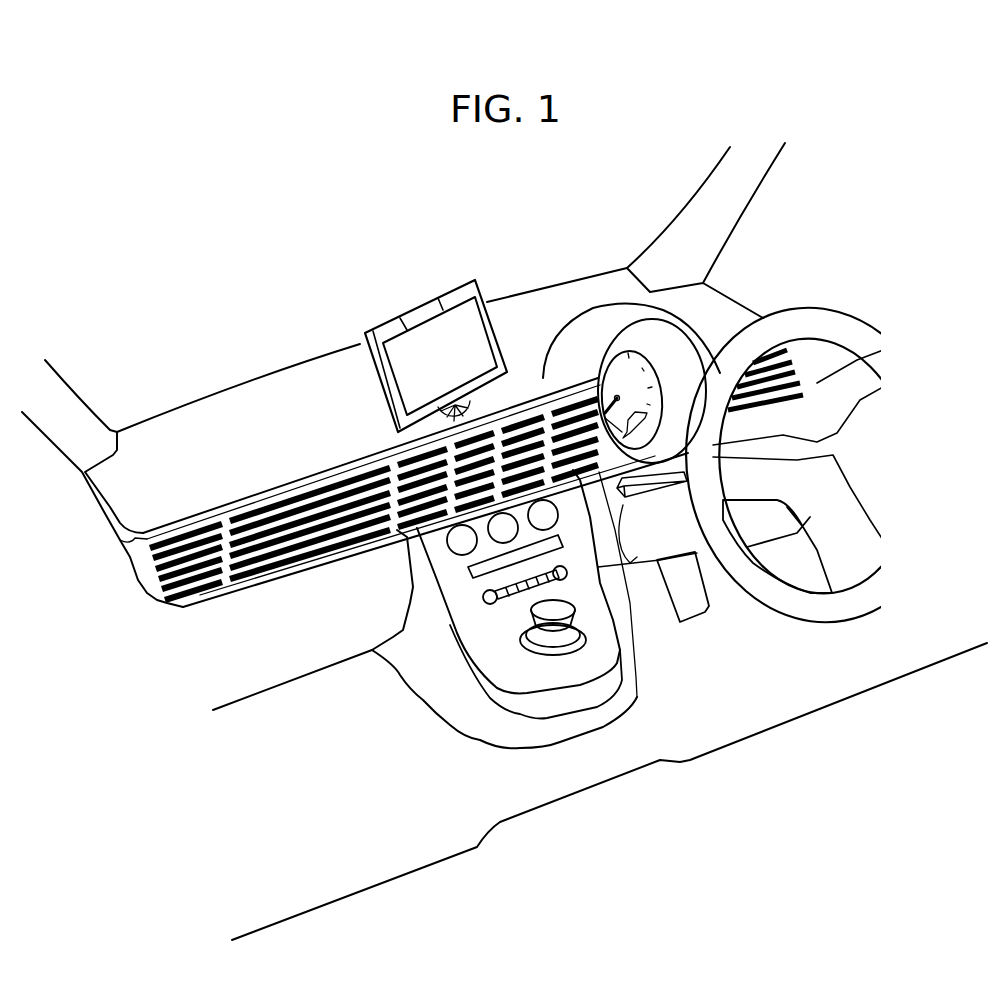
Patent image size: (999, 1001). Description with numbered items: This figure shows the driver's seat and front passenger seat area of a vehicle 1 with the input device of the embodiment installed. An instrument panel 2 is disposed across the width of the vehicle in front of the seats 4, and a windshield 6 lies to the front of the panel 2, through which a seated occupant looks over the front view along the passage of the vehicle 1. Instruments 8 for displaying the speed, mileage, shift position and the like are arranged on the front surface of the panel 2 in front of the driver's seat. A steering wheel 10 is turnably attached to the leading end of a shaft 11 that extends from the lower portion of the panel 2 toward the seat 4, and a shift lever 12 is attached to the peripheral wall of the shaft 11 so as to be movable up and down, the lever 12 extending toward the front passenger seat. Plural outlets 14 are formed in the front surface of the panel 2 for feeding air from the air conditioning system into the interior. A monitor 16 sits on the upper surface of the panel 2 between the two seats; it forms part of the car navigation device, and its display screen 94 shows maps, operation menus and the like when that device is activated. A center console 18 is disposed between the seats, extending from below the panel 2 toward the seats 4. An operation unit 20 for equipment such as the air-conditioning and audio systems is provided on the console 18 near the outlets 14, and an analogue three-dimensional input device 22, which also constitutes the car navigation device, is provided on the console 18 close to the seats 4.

The vehicle 1 is at (128, 268).
The instrument panel 2 is at (297, 378).
The seats 4 is at (943, 705).
The windshield 6 is at (640, 217).
The instruments 8 is at (683, 368).
The steering wheel 10 is at (815, 323).
The shaft 11 is at (773, 528).
The shift lever 12 is at (630, 497).
The outlets 14 is at (163, 600).
The monitor 16 is at (477, 249).
The display screen 94 is at (405, 350).
The center console 18 is at (420, 712).
The operation unit 20 is at (443, 584).
The analogue 3D input device 22 is at (594, 656).